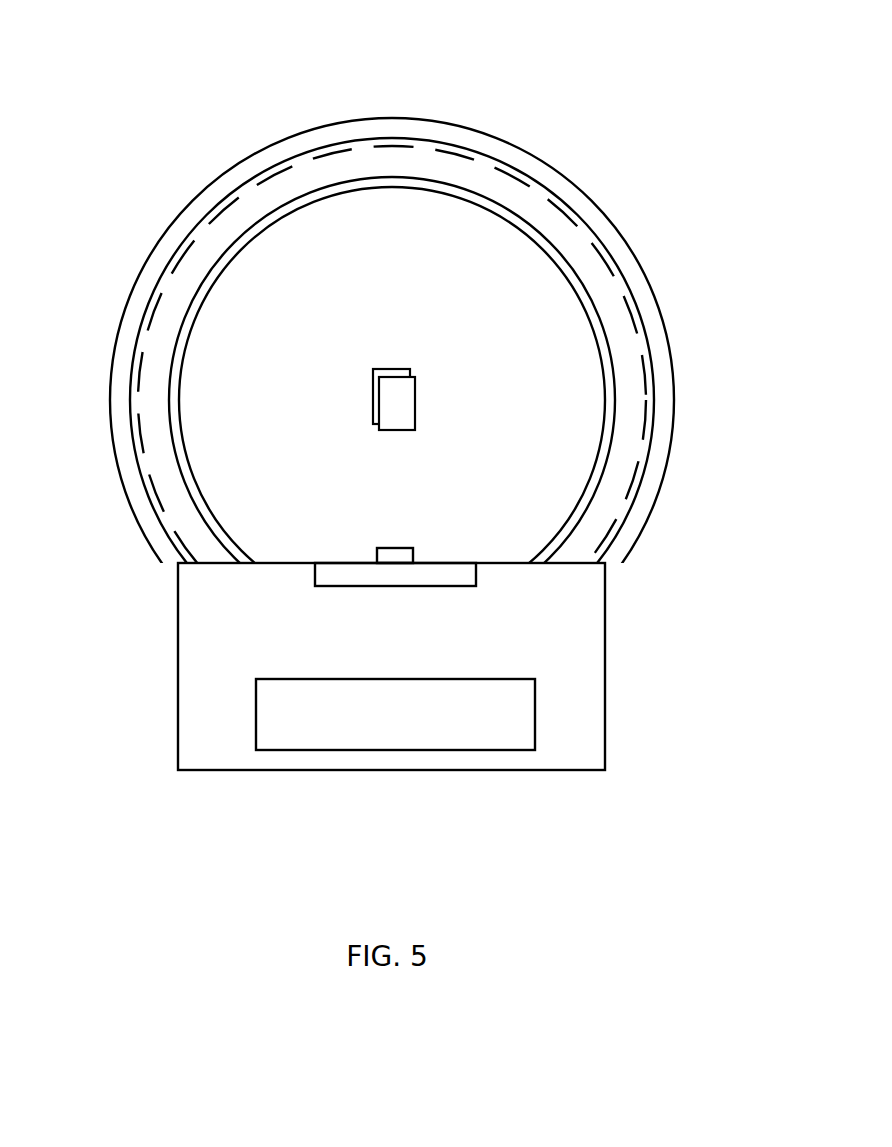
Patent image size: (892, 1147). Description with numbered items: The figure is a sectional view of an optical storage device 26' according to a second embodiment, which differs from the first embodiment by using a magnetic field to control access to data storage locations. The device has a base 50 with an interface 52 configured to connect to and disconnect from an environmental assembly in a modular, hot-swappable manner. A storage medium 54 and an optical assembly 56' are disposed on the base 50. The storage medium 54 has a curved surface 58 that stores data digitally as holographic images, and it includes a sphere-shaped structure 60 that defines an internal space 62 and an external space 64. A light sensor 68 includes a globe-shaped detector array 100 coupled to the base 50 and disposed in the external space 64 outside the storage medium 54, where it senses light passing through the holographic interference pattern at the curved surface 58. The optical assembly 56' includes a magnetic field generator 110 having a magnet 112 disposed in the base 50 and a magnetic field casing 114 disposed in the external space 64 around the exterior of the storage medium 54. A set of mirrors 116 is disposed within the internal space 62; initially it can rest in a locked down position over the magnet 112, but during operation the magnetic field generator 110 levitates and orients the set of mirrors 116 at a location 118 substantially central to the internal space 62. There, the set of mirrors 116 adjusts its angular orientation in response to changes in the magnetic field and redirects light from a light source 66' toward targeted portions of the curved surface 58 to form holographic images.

The optical storage device 26' is at (425, 397).
The base 50 is at (163, 650).
The interface 52 is at (378, 729).
The storage medium 54 is at (517, 184).
The optical assembly 56' is at (445, 379).
The curved surface 58 is at (558, 233).
The sphere-shaped structure 60 is at (598, 271).
The internal space 62 is at (329, 367).
The external space 64 is at (86, 274).
The light source 66' is at (374, 519).
The light sensor 68 is at (654, 463).
The detector array 100 is at (658, 310).
The magnetic field generator 110 is at (693, 351).
The magnet 112 is at (324, 599).
The magnetic field casing 114 is at (683, 400).
The set of mirrors 116 is at (427, 428).
The location 118 is at (350, 441).